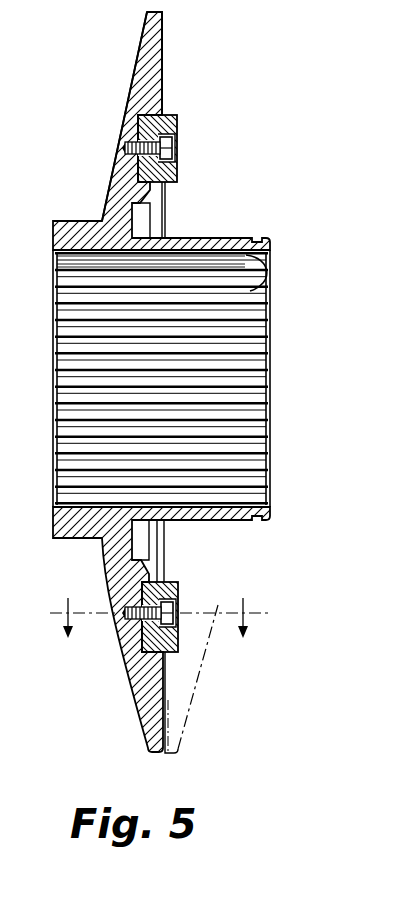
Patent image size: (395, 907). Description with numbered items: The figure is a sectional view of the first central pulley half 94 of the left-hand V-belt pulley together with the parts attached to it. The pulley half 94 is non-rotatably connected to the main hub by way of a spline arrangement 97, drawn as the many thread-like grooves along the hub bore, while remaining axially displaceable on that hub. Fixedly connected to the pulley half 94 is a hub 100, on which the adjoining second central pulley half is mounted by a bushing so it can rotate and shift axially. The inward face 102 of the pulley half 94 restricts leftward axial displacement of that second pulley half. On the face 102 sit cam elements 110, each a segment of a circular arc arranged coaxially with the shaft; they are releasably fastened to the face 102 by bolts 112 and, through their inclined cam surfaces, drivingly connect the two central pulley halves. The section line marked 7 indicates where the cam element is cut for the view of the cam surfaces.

The central pulley half 94 is at (155, 36).
The inward face 102 is at (168, 57).
The cam element 110 is at (190, 119).
The hub 100 is at (248, 236).
The spline arrangement 97 is at (275, 288).
The bolt 112 is at (181, 611).
The section line 7- 7 is at (159, 613).